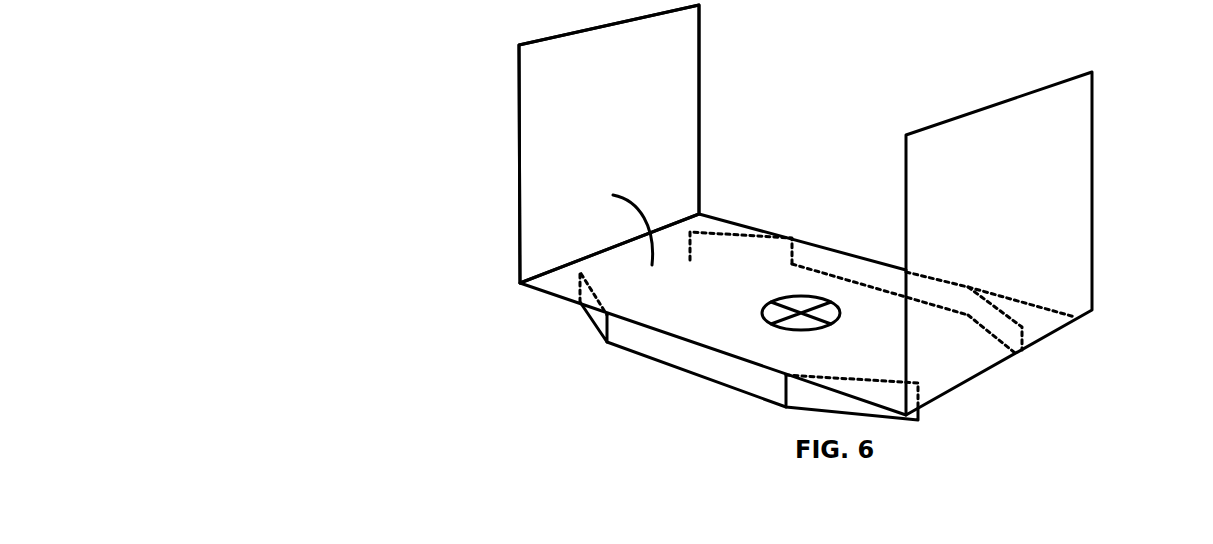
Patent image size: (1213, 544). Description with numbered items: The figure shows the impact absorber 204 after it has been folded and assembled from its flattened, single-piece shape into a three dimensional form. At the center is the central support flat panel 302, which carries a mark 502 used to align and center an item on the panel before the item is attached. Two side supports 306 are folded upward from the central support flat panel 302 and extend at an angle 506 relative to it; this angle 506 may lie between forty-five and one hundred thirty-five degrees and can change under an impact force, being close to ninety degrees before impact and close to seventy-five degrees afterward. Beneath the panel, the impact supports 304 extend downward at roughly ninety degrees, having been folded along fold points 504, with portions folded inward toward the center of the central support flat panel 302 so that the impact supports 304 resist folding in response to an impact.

The impact absorber 204 is at (299, 146).
The central support flat panel 302 is at (557, 278).
The impact supports 304 is at (735, 243).
The side supports 306 is at (550, 89).
The mark 502 is at (776, 332).
The fold points 504 is at (786, 393).
The angle 506 is at (637, 222).